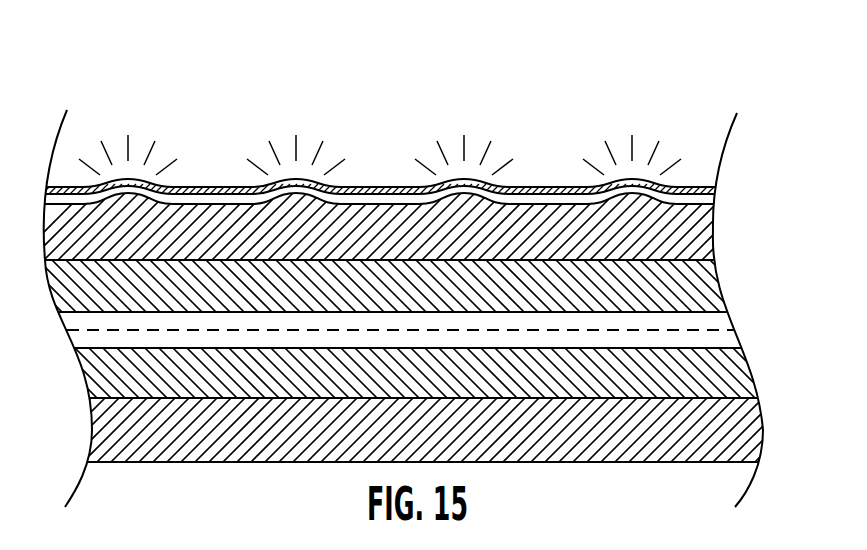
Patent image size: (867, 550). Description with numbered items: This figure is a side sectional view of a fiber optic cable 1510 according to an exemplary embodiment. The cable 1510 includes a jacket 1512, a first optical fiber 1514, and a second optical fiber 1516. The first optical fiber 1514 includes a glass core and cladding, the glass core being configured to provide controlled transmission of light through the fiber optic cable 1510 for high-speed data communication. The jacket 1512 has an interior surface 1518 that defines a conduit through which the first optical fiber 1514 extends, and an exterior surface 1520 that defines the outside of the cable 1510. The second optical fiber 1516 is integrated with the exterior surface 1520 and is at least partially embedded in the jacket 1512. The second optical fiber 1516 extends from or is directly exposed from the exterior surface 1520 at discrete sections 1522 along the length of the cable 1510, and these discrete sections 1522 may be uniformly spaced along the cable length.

The fiber optic cable 1510 is at (777, 110).
The jacket 1512 is at (367, 222).
The first optical fiber 1514 is at (552, 322).
The second optical fiber 1516 is at (527, 203).
The interior surface 1518 is at (161, 270).
The exterior surface 1520 is at (233, 182).
The discrete sections 1522 is at (313, 132).